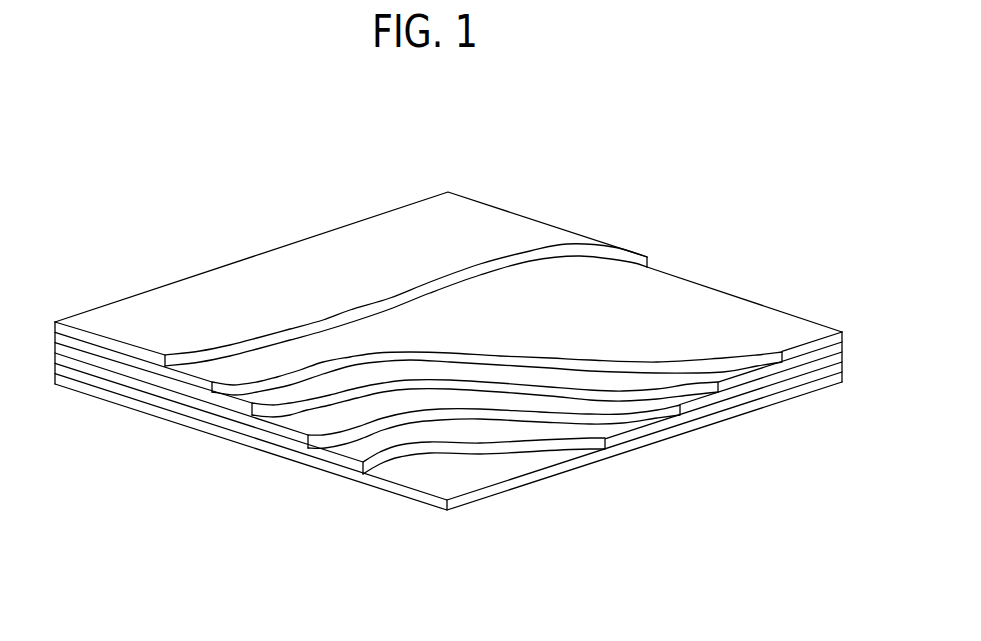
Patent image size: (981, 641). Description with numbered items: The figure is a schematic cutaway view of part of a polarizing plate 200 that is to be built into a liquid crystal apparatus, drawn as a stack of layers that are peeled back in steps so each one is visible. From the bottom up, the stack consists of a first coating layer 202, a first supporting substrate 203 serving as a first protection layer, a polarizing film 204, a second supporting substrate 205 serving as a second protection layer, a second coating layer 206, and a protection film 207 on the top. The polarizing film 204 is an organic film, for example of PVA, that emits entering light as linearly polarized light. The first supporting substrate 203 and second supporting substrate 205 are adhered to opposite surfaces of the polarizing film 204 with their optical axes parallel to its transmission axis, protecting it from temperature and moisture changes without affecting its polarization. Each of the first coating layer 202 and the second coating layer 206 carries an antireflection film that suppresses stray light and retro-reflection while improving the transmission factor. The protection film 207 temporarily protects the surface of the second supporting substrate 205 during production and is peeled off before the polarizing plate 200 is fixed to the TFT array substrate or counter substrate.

The polarizing plate 200 is at (522, 176).
The first coating layer 202 is at (407, 483).
The first supporting substrate 203 is at (350, 455).
The polarizing film 204 is at (295, 427).
The second supporting substrate 205 is at (243, 400).
The second coating layer 206 is at (680, 295).
The protection film 207 is at (505, 225).